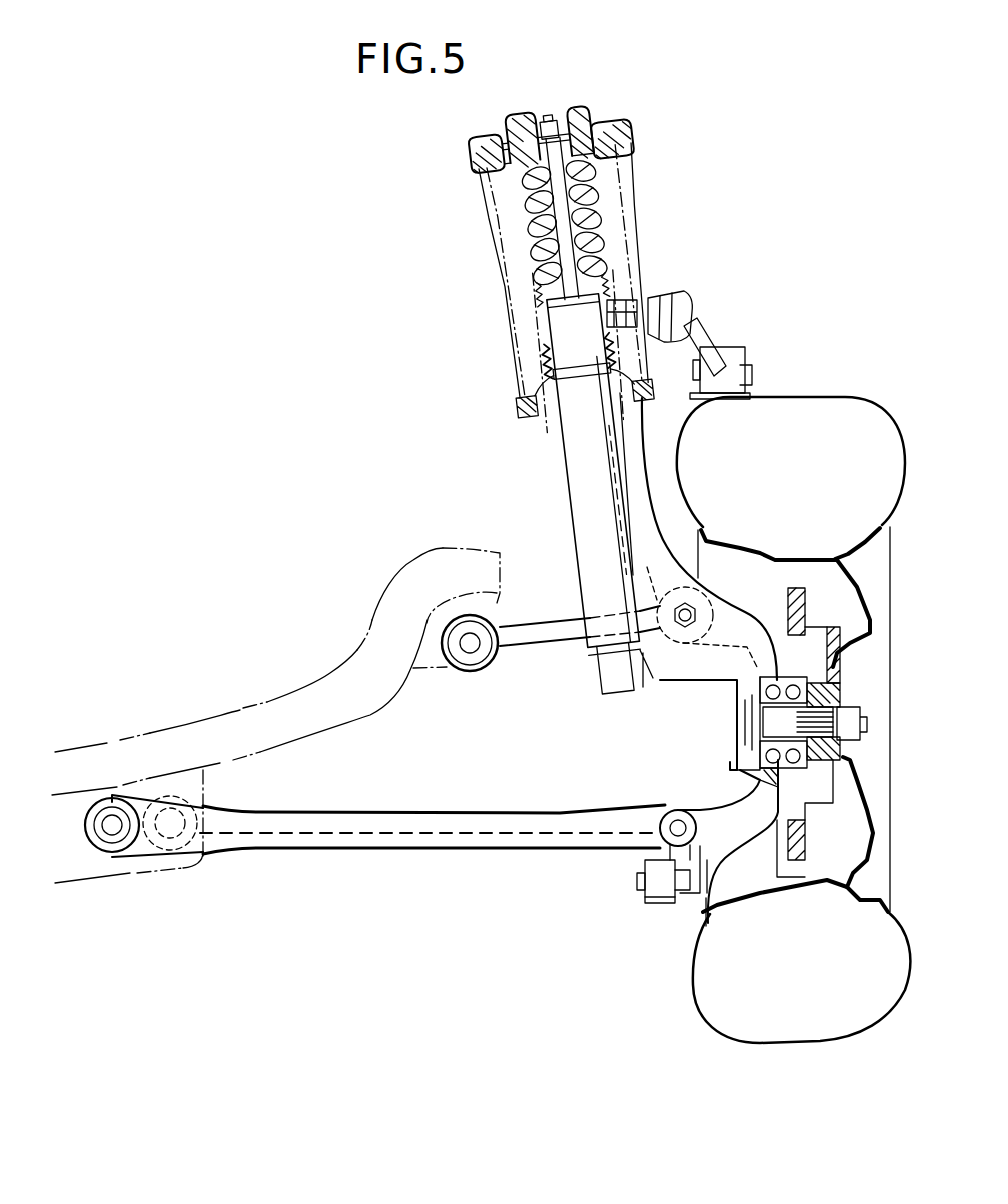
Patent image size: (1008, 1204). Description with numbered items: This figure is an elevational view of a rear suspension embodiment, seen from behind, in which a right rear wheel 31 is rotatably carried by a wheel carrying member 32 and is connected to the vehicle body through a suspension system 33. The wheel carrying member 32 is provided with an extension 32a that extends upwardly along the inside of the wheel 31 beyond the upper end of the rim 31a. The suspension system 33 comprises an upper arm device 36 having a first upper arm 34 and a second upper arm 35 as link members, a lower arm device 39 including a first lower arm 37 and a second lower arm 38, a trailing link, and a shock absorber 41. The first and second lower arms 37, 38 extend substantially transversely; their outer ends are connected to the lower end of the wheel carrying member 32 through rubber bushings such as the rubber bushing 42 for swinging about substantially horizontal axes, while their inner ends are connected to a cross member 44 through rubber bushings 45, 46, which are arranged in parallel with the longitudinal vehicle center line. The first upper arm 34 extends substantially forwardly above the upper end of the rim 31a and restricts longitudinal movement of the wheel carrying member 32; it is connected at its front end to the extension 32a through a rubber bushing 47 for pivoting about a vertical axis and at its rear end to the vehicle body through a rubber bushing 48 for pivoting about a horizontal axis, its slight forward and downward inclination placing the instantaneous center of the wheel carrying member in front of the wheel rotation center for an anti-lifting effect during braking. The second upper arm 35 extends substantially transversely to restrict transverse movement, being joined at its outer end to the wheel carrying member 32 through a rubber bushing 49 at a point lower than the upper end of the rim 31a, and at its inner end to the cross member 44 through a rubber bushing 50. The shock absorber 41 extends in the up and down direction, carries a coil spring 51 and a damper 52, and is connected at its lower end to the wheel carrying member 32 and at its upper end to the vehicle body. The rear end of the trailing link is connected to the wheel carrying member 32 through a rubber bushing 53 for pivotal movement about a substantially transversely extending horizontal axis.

The right rear wheel 31 is at (780, 396).
The rim 31a is at (792, 560).
The wheel carrying member 32 is at (707, 670).
The extension 32a is at (652, 452).
The suspension system 33 is at (486, 475).
The first upper arm 34 is at (690, 326).
The second upper arm 35 is at (553, 620).
The upper arm device 36 is at (755, 331).
The first lower arm 37 is at (391, 826).
The second lower arm 38 is at (450, 824).
The lower arm device 39 is at (456, 778).
The shock absorber 41 is at (638, 200).
The rubber bushing 42 is at (678, 818).
The cross member 44 is at (222, 763).
The rubber bushing 45 is at (108, 852).
The rubber bushing 46 is at (178, 800).
The rubber bushing 47 is at (670, 296).
The rubber bushing 48 is at (746, 357).
The rubber bushing 49 is at (660, 600).
The rubber bushing 50 is at (512, 592).
The coil spring 51 is at (640, 232).
The damper 52 is at (545, 350).
The rubber bushing 53 is at (660, 902).